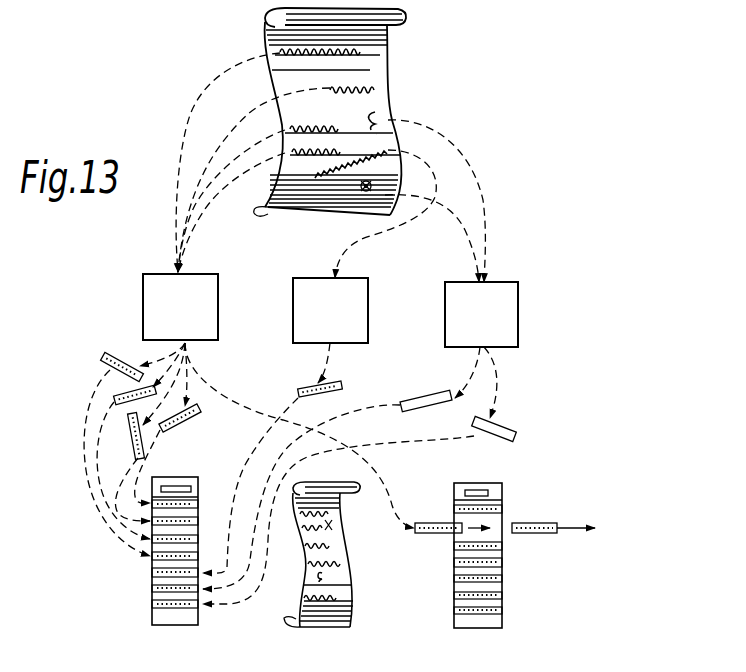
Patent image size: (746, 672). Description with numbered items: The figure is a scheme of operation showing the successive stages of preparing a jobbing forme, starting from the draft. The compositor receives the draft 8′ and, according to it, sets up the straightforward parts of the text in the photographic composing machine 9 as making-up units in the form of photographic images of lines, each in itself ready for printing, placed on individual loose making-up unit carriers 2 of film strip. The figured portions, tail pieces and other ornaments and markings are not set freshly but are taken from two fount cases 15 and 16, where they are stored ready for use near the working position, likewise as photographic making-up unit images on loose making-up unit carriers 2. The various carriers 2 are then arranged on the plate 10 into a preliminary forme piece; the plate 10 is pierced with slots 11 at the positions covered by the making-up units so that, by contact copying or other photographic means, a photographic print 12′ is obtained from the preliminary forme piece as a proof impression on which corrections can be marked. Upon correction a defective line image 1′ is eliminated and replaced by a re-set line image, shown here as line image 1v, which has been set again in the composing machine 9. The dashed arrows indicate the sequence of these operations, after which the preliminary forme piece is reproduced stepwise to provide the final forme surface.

The draft 8′ is at (383, 107).
The photographic composing machine 9 is at (200, 290).
The fount case 15 is at (345, 298).
The fount case 16 is at (498, 302).
The making-up unit carrier 2 is at (102, 360).
The plate 10 is at (163, 617).
The slot 11 is at (197, 480).
The record card 1v is at (427, 537).
The defective line image 1′ is at (543, 523).
The photographic print 12′ is at (290, 620).